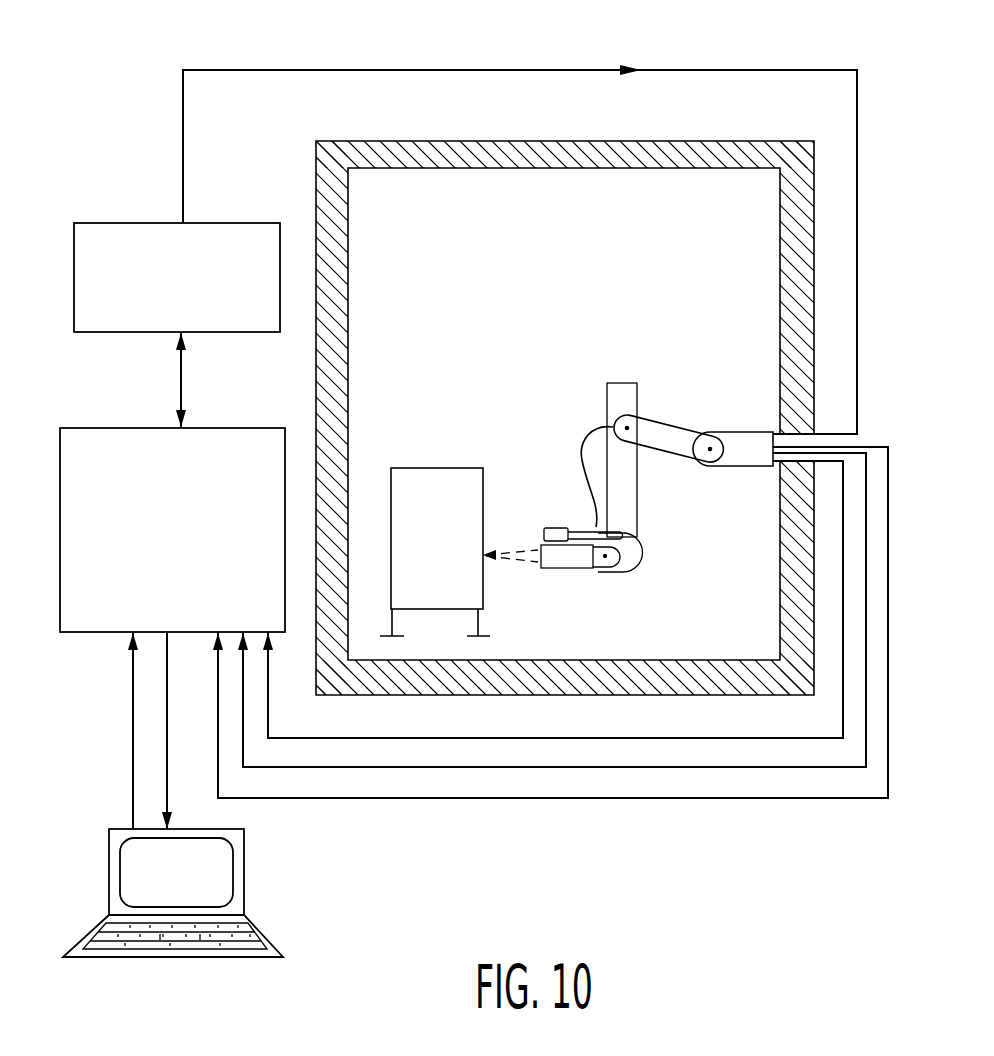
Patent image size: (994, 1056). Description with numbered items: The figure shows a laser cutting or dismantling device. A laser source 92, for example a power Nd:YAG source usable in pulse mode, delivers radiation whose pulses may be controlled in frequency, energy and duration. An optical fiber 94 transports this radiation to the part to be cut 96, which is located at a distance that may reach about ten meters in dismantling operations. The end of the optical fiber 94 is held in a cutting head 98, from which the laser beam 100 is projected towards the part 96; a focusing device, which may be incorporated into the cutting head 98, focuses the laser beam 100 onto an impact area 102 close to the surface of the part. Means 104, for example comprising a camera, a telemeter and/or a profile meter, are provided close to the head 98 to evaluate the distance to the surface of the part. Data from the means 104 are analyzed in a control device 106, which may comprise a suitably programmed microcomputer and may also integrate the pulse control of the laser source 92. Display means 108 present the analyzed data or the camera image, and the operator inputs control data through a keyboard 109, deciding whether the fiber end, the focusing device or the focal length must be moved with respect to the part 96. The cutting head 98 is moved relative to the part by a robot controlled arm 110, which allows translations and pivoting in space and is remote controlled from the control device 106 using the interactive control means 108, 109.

The laser source 92 is at (130, 224).
The optical fiber 94 is at (289, 32).
The part to be cut 96 is at (414, 469).
The cutting head 98 is at (590, 567).
The laser beam 100 is at (527, 562).
The impact area 102 is at (486, 552).
The distance evaluating means 104 is at (563, 527).
The control device 106 is at (124, 433).
The display means 108 is at (112, 843).
The keyboard 109 is at (140, 953).
The robot controlled arm 110 is at (626, 388).